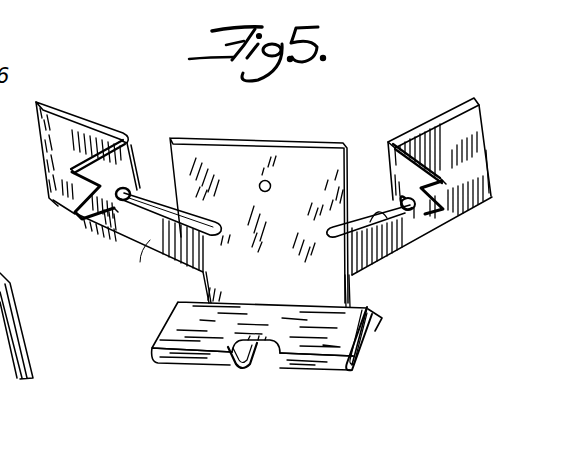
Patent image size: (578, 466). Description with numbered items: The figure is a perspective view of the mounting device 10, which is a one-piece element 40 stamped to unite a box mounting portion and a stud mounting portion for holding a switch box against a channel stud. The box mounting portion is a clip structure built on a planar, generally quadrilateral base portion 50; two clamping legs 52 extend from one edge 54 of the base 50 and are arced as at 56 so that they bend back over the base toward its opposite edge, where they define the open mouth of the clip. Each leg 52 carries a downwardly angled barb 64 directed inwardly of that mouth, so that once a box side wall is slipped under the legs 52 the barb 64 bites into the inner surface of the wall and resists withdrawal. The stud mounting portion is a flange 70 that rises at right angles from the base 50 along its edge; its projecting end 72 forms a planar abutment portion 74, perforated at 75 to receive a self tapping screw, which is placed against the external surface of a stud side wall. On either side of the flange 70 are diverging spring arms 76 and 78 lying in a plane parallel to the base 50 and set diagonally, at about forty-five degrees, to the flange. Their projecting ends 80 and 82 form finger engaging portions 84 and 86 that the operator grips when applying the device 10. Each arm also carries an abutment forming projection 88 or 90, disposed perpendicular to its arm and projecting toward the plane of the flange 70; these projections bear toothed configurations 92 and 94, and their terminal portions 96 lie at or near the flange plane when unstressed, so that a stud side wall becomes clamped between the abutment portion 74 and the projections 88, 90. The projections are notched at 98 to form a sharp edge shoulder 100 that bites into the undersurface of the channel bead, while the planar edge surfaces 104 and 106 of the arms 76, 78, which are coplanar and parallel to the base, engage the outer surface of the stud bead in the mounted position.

The device 10 is at (445, 95).
The one-piece element 40 is at (462, 205).
The base portion 50 is at (333, 323).
The clamping legs 52 is at (247, 368).
The edge 54 is at (268, 357).
The arc 56 is at (215, 363).
The barb 64 is at (378, 330).
The flange 70 is at (3, 378).
The projecting end 72 is at (260, 147).
The abutment portion 74 is at (290, 172).
The perforation 75 is at (270, 189).
The spring arm 76 is at (420, 230).
The spring arm 78 is at (132, 262).
The projecting end 80 is at (480, 133).
The projecting end 82 is at (43, 141).
The finger engaging portion 84 is at (488, 193).
The finger engaging portion 86 is at (57, 112).
The abutment forming projection 88 is at (394, 141).
The abutment forming projection 90 is at (107, 160).
The toothed configuration 92 is at (447, 168).
The toothed configuration 94 is at (65, 161).
The terminal portions 96 is at (53, 200).
The notch 98 is at (122, 188).
The sharp edge shoulder 100 is at (133, 232).
The planar edge surface 104 is at (390, 243).
The planar edge surface 106 is at (160, 214).